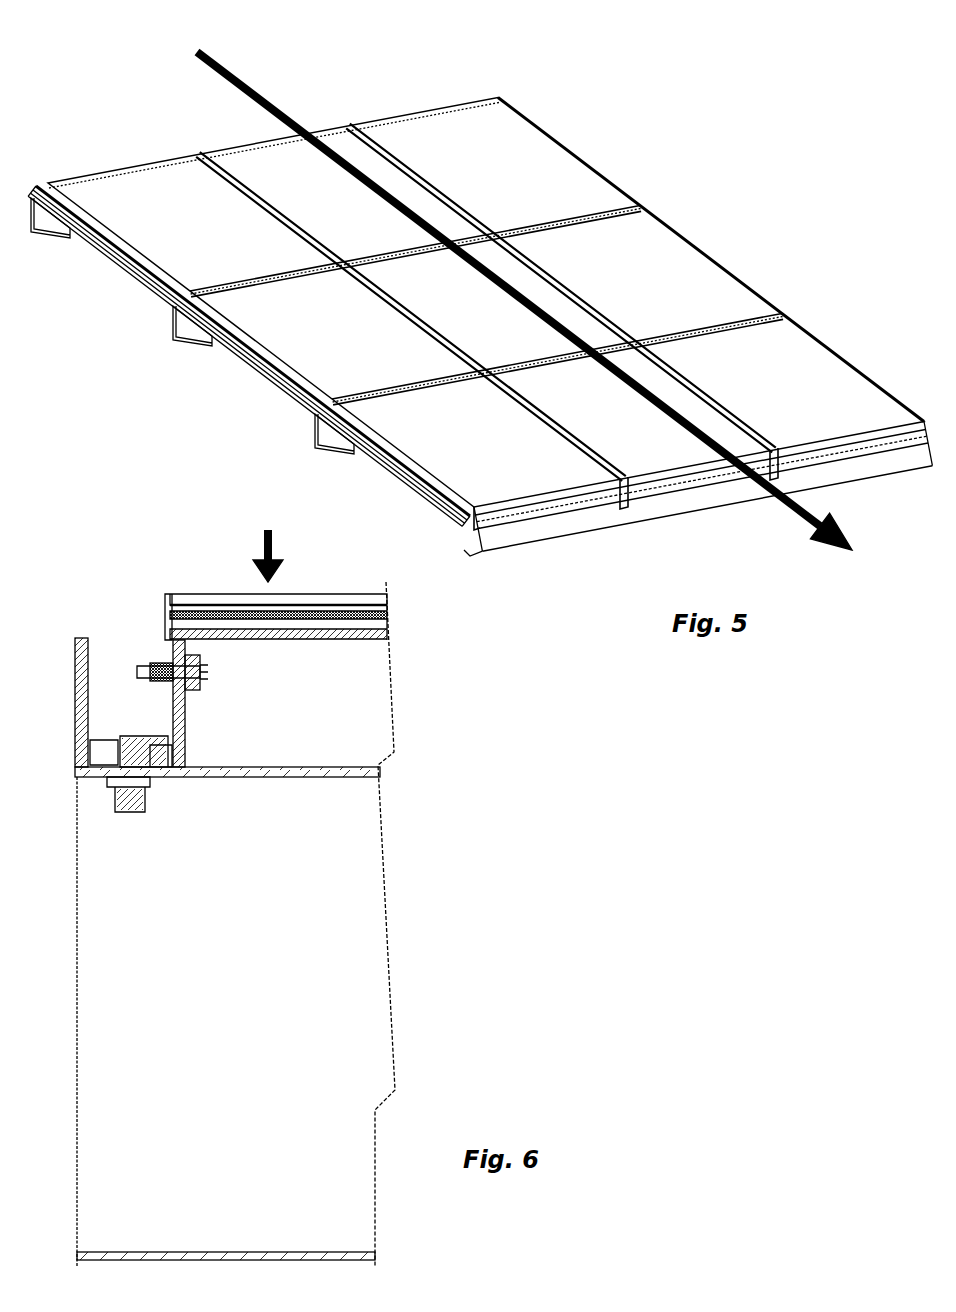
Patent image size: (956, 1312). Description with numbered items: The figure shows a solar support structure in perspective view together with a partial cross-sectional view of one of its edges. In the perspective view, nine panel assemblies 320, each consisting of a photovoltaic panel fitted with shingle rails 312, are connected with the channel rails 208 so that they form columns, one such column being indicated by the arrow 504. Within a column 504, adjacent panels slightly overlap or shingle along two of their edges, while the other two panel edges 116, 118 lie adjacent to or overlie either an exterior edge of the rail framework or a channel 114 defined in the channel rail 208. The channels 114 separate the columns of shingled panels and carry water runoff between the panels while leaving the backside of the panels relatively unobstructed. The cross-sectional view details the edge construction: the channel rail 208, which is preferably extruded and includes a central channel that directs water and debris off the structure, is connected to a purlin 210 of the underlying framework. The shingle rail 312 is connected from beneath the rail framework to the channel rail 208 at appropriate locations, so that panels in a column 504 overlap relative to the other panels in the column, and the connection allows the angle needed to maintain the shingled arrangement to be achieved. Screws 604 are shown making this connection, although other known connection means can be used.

In FIG. 5, the channel 114 is at (30, 186).
In FIG. 5, the edge 116 is at (515, 106).
In FIG. 5, the edge 118 is at (427, 172).
In FIG. 5, the panel assembly 320 is at (214, 258).
In FIG. 5, the column 504 is at (260, 75).
In FIG. 6, the column 504 is at (262, 545).
In FIG. 6, the channel rail 208 is at (75, 672).
In FIG. 6, the shingle rail 312 is at (173, 710).
In FIG. 6, the screw 604 is at (200, 671).
In FIG. 6, the purlin 210 is at (252, 1038).